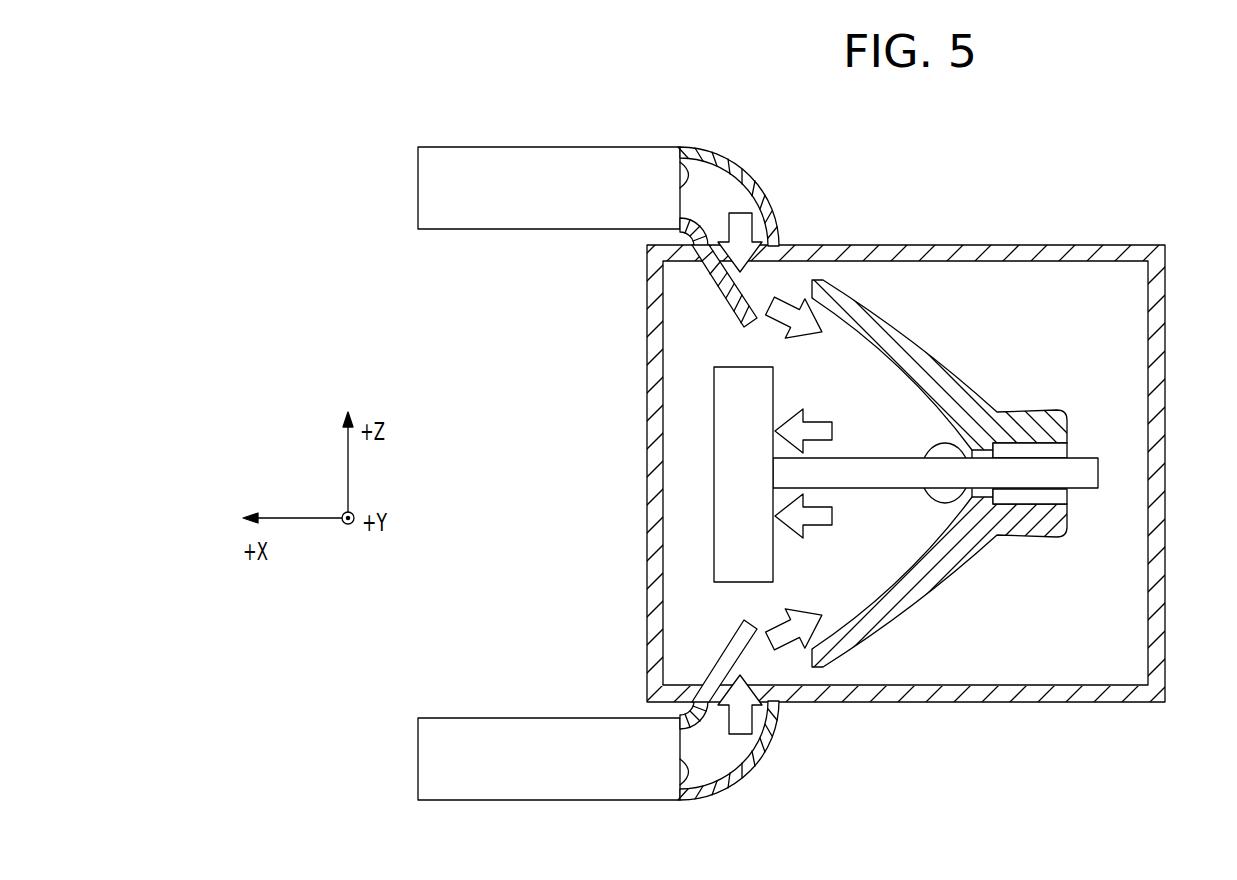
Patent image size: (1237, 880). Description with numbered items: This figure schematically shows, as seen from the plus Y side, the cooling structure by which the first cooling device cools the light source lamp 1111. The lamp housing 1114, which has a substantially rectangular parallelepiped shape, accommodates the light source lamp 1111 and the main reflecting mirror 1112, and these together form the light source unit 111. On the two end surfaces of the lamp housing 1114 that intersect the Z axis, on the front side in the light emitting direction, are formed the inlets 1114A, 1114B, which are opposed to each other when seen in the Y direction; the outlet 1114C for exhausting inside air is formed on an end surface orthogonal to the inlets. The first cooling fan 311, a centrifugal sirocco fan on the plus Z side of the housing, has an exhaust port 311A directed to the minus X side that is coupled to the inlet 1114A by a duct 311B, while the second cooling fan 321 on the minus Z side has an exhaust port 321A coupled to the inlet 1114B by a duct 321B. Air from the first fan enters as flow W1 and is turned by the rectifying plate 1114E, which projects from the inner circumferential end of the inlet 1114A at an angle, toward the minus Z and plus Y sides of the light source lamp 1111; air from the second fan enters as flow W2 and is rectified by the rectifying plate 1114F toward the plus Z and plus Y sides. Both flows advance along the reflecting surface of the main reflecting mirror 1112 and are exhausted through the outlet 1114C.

The light source unit (light source device 11A) 111 is at (1113, 772).
The light source lamp 1111 is at (903, 482).
The main reflecting mirror 1112 is at (953, 563).
The lamp housing 1114 is at (1088, 692).
The inlet 1114A is at (768, 240).
The inlet 1114B is at (768, 706).
The outlet 1114C is at (720, 450).
The rectifying plate 1114E is at (723, 288).
The rectifying plate 1114F is at (723, 658).
The first cooling fan 311 is at (500, 157).
The exhaust port 311A is at (690, 180).
The duct 311B is at (722, 158).
The second cooling fan 321 is at (500, 790).
The exhaust port 321A is at (688, 786).
The duct 321B is at (722, 790).
The first cooling air flow W1 is at (743, 226).
The second cooling air flow W2 is at (743, 721).